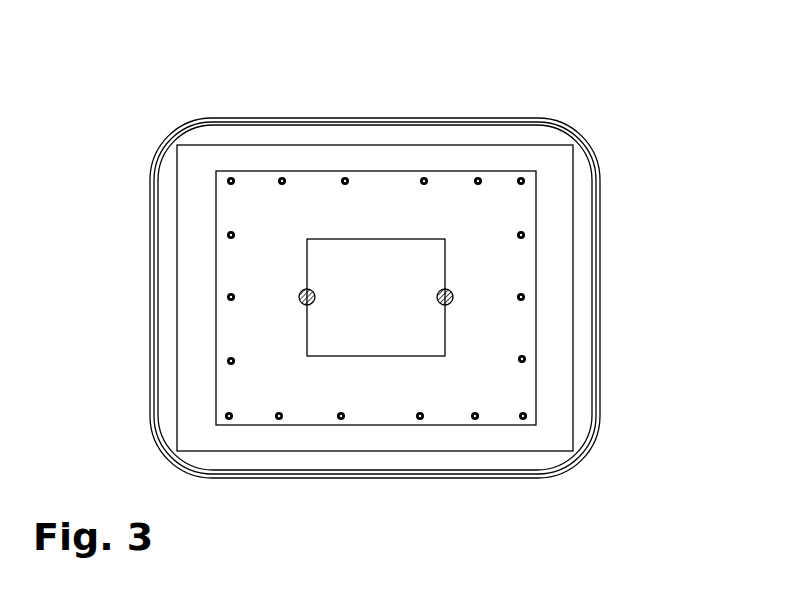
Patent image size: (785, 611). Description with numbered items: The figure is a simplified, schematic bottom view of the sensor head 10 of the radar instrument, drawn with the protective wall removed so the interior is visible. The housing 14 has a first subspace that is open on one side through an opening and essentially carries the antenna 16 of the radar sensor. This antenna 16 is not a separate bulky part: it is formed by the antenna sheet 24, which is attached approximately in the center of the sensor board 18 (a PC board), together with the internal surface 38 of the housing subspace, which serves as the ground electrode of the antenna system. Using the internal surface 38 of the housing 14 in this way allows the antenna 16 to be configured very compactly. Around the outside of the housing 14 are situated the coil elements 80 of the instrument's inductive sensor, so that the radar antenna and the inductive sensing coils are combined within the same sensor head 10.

The sensor head 10 is at (142, 238).
The housing 14 is at (578, 295).
The antenna 16 is at (388, 223).
The sensor board 18 is at (363, 392).
The antenna sheet 24 is at (407, 330).
The internal surface 38 is at (560, 205).
The coil elements 80 is at (255, 478).